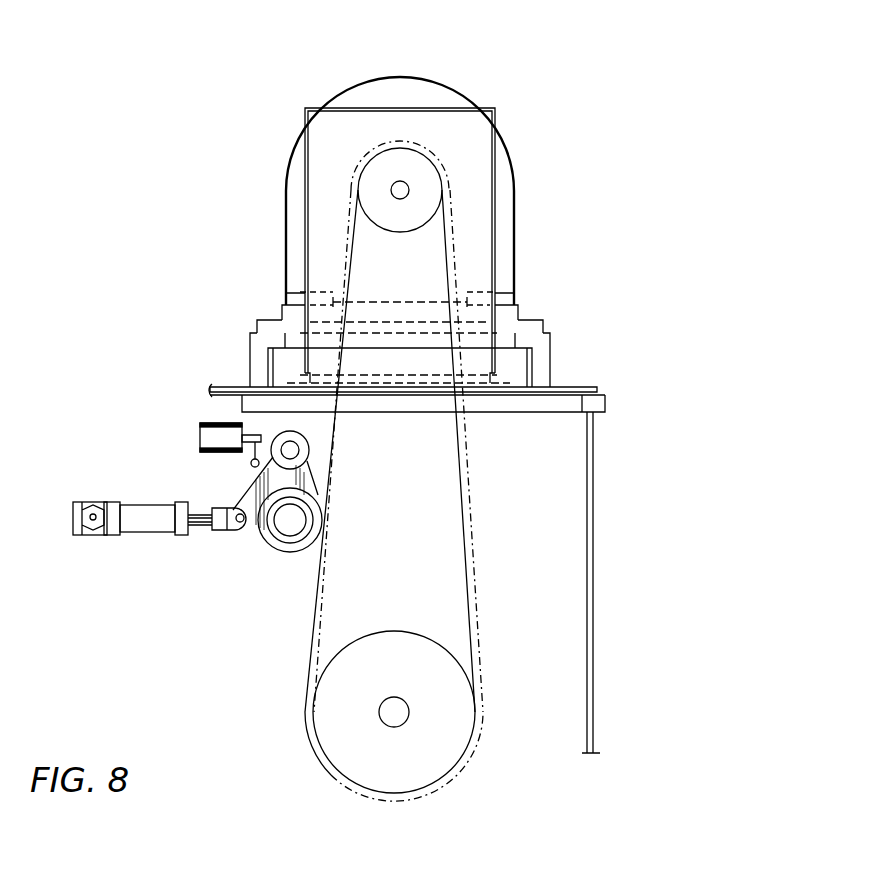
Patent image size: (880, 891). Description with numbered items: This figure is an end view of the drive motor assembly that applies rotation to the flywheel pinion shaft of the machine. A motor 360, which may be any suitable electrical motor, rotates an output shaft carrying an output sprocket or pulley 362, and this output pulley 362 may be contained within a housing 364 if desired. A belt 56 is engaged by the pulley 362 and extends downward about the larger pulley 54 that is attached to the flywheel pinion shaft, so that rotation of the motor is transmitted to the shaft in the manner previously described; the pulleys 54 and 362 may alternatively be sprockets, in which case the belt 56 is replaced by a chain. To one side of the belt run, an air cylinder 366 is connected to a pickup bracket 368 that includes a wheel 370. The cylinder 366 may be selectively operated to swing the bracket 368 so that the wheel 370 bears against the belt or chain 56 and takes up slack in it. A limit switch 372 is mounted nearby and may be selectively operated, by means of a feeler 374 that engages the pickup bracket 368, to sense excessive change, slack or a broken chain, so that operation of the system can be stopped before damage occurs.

The pulley 54 is at (432, 735).
The belt 56 is at (452, 278).
The motor 360 is at (507, 243).
The output sprocket or pulley 362 is at (425, 188).
The housing 364 is at (488, 115).
The air cylinder 366 is at (148, 527).
The pickup bracket 368 is at (250, 533).
The wheel 370 is at (290, 552).
The limit switch 372 is at (232, 437).
The feeler 374 is at (252, 467).